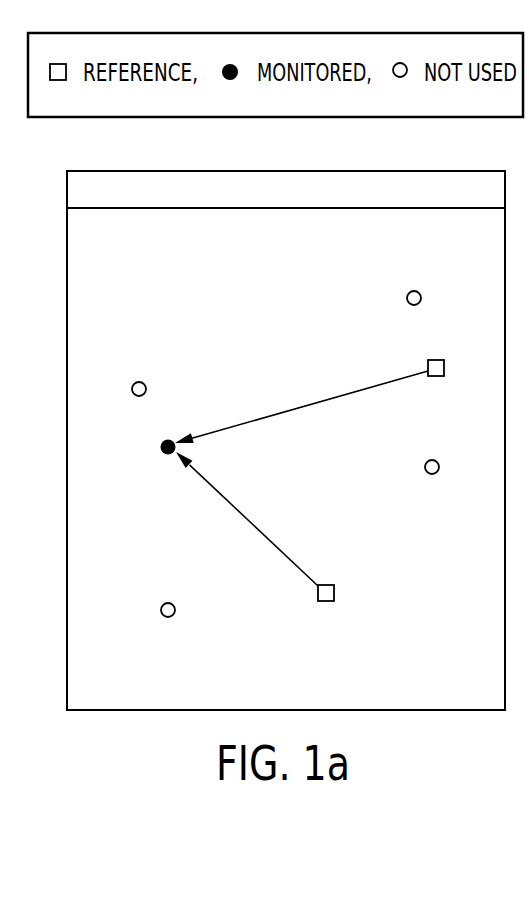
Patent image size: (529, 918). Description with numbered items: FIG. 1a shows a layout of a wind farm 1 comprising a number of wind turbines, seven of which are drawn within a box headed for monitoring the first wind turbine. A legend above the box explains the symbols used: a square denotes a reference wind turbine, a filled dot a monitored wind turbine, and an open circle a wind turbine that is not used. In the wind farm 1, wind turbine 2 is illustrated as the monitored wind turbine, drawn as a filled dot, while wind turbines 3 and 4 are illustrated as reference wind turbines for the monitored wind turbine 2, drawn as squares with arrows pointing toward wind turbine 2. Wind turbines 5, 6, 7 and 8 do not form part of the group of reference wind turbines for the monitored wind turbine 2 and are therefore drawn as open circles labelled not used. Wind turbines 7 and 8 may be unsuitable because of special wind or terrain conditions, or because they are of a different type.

The wind farm 1 is at (162, 247).
The wind turbine 2 is at (160, 445).
The wind turbine 3 is at (428, 364).
The wind turbine 4 is at (334, 596).
The wind turbine 5 is at (425, 463).
The wind turbine 6 is at (138, 381).
The wind turbine 7 is at (407, 296).
The wind turbine 8 is at (165, 602).